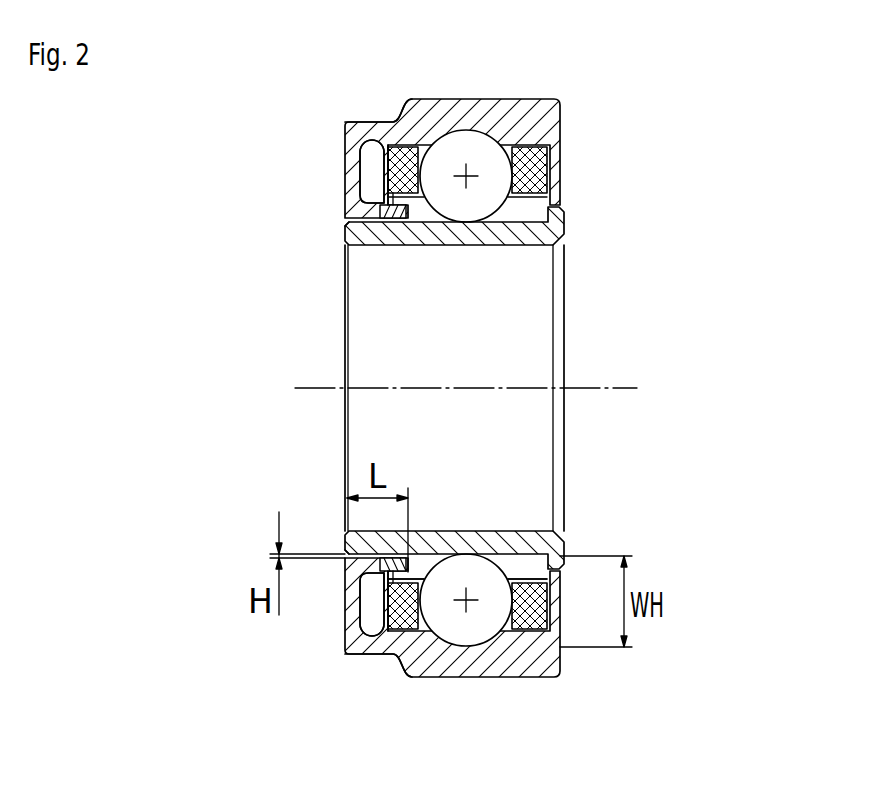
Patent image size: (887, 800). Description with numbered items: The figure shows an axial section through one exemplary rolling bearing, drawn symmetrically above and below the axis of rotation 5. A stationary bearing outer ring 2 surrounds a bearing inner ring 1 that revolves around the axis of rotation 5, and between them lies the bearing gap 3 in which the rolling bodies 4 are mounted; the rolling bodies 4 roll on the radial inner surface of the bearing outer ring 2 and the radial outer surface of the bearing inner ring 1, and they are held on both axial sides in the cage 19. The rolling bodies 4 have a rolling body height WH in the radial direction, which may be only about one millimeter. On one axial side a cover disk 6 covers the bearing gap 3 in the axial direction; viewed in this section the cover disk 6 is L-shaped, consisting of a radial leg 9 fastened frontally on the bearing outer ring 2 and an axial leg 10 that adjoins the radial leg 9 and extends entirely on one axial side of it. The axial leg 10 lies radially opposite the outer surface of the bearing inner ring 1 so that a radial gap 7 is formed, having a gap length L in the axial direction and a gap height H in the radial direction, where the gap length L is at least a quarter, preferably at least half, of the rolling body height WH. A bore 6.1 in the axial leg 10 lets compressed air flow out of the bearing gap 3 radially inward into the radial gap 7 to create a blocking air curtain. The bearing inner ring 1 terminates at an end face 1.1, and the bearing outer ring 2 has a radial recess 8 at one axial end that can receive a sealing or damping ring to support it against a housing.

The bearing inner ring 1 is at (546, 231).
The end face 1.1 is at (345, 547).
The bearing outer ring 2 is at (547, 128).
The bearing gap 3 is at (540, 173).
The rolling bodies 4 is at (470, 207).
The axis of rotation 5 is at (598, 387).
The cover disk 6 is at (346, 169).
The bore 6.1 is at (396, 212).
The radial gap 7 is at (350, 221).
The radial recess 8 is at (384, 656).
The radial leg 9 is at (347, 126).
The axial leg 10 is at (373, 234).
The cage 19 is at (528, 602).